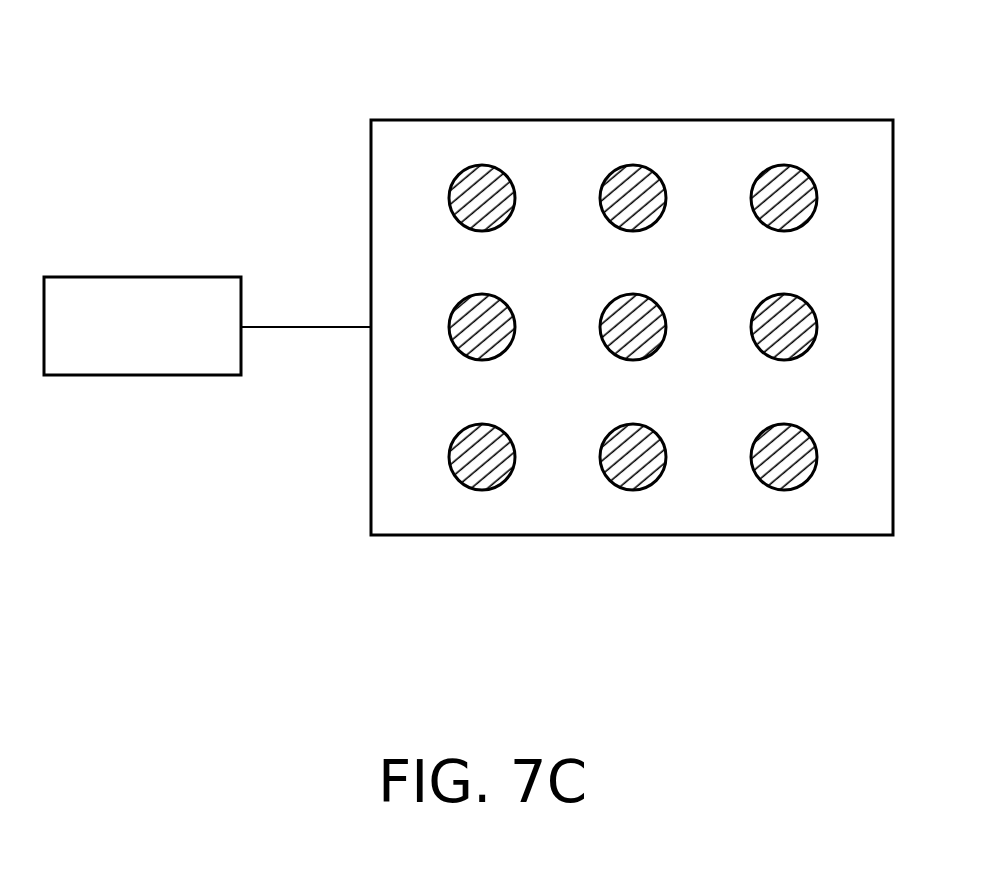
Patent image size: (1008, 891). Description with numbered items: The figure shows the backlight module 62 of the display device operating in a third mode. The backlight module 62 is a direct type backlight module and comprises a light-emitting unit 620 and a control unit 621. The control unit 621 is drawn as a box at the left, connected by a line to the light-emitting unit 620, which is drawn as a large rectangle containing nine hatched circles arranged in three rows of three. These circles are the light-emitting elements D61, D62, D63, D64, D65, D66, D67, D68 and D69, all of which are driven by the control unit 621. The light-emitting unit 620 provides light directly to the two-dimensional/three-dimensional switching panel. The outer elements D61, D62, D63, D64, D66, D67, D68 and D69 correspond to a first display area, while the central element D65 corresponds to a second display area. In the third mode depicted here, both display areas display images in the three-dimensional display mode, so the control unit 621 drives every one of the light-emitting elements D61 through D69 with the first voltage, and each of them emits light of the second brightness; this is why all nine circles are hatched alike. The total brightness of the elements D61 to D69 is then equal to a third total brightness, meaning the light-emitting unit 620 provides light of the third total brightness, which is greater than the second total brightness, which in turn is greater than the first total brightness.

The backlight module 62 is at (169, 53).
The light-emitting unit 620 is at (634, 119).
The control unit 621 is at (160, 277).
The light-emitting element D61 is at (515, 199).
The light-emitting element D62 is at (666, 199).
The light-emitting element D63 is at (817, 199).
The light-emitting element D64 is at (515, 328).
The light-emitting element D65 is at (666, 328).
The light-emitting element D66 is at (817, 328).
The light-emitting element D67 is at (515, 458).
The light-emitting element D68 is at (666, 458).
The light-emitting element D69 is at (817, 458).